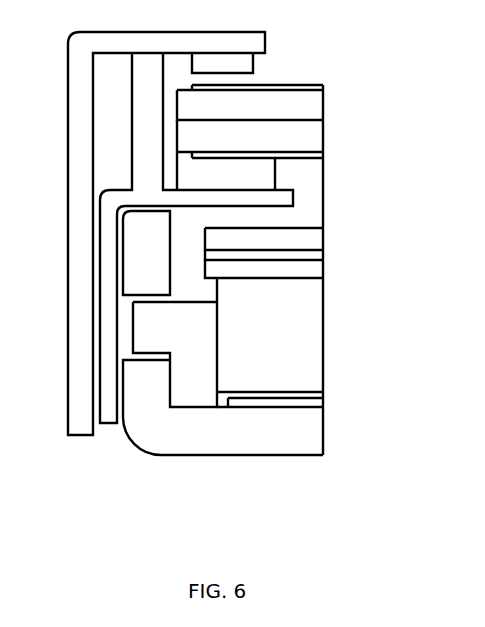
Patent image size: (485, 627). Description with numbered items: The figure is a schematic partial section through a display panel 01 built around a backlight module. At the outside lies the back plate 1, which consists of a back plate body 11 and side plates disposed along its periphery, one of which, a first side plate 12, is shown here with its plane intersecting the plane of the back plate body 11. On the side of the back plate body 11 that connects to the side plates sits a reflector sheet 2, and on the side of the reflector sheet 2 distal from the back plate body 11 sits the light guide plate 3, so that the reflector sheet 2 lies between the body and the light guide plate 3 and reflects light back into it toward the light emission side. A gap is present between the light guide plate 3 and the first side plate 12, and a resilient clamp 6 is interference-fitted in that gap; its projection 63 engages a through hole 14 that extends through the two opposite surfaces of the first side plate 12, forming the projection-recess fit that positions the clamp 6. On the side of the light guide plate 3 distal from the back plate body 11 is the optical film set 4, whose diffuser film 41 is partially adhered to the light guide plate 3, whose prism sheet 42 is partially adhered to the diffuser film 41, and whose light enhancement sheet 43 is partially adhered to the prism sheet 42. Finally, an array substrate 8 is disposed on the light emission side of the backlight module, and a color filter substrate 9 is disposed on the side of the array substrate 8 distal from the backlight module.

The display panel 01 is at (55, 45).
The back plate 1 is at (210, 448).
The back plate body 11 is at (190, 437).
The first side plate 12 is at (140, 375).
The through hole 14 is at (130, 332).
The reflector sheet 2 is at (288, 400).
The light guide plate 3 is at (295, 347).
The optical film set 4 is at (304, 260).
The diffuser film 41 is at (286, 287).
The prism sheet 42 is at (303, 257).
The light enhancement sheet 43 is at (303, 238).
The clamp 6 is at (193, 387).
The projection 63 is at (150, 338).
The array substrate 8 is at (307, 135).
The color filter substrate 9 is at (312, 103).